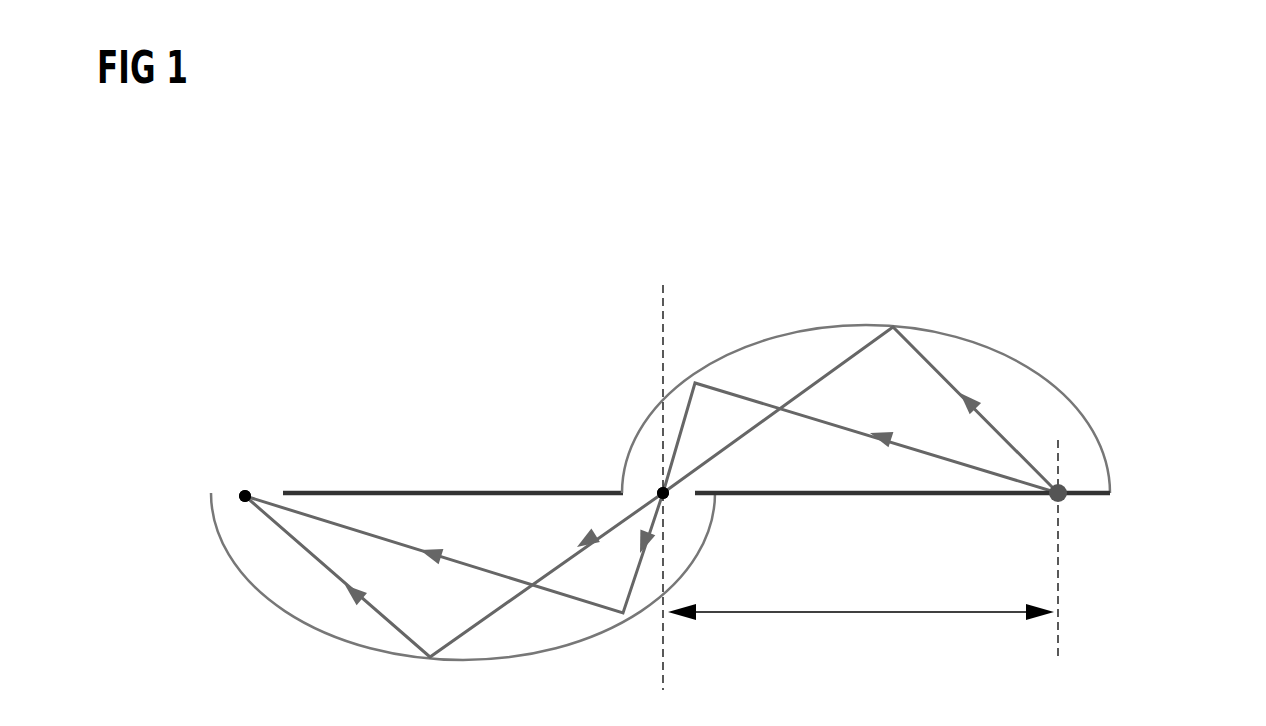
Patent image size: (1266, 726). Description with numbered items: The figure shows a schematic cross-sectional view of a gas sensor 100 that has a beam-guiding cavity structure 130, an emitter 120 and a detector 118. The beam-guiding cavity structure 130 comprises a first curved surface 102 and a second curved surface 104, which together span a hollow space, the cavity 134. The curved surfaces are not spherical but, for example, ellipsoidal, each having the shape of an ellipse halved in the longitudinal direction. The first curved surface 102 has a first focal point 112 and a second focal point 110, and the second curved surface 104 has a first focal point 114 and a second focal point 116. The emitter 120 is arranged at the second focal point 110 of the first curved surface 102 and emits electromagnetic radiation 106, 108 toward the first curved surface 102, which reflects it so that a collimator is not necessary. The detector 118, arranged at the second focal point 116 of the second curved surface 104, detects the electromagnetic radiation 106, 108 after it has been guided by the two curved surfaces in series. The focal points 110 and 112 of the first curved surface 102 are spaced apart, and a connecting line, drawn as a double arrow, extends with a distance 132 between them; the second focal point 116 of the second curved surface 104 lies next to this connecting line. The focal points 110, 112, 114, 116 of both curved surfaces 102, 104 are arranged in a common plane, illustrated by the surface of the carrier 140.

The gas sensor 100 is at (1143, 317).
The first curved surface 102 is at (1015, 360).
The second curved surface 104 is at (292, 620).
The electromagnetic radiation 106 is at (450, 563).
The electromagnetic radiation 108 is at (400, 630).
The second focal point of the first curved surface 110 is at (1048, 496).
The first focal point of the first curved surface 112 is at (667, 492).
The first focal point of the second curved surface 114 is at (663, 493).
The second focal point of the second curved surface 116 is at (272, 472).
The detector 118 is at (245, 496).
The emitter 120 is at (1077, 483).
The beam-guiding cavity structure 130 is at (876, 290).
The connecting line / distance 132 is at (860, 487).
The cavity 134 is at (797, 340).
The carrier 140 is at (828, 495).